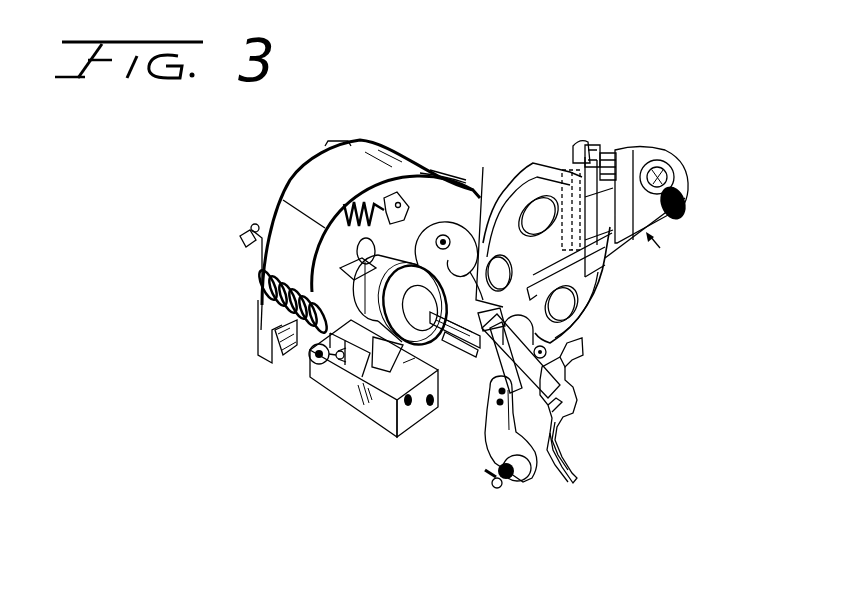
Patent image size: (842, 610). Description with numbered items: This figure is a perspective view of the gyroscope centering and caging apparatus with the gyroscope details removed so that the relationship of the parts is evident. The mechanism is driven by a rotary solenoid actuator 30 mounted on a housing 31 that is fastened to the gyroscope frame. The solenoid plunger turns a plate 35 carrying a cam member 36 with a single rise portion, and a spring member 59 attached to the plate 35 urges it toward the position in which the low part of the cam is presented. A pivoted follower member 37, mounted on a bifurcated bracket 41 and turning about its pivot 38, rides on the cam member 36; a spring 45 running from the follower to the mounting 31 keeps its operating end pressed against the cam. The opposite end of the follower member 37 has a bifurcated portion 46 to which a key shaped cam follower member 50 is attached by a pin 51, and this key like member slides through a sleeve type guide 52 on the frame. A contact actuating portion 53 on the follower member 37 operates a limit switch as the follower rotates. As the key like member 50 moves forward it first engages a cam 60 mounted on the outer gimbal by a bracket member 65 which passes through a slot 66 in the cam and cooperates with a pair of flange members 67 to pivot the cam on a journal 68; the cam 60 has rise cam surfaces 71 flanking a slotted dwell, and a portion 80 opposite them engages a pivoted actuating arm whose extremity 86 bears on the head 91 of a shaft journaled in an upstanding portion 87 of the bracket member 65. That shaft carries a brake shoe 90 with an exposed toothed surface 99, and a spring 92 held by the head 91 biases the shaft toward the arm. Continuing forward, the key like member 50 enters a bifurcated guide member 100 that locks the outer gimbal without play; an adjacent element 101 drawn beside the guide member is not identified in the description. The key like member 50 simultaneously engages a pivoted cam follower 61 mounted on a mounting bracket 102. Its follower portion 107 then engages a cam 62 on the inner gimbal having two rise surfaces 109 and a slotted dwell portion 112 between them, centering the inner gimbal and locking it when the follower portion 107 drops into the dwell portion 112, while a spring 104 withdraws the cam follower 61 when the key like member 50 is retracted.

The actuator 30 is at (308, 180).
The housing 31 is at (275, 204).
The plate 35 is at (444, 195).
The cam member 36 is at (490, 210).
The follower member 37 is at (363, 360).
The pivot 38 is at (312, 364).
The bifurcated bracket 41 is at (378, 410).
The spring 45 is at (280, 272).
The bifurcated portion 46 is at (370, 242).
The key shaped cam follower member 50 is at (451, 335).
The pin 51 is at (360, 257).
The sleeve type guide 52 is at (384, 260).
The contact actuating portion 53 is at (340, 359).
The spring member 59 is at (366, 200).
The cam 60 is at (585, 300).
The cam follower 61 is at (482, 400).
The cam 62 is at (560, 362).
The bracket member 65 is at (664, 248).
The slot 66 is at (600, 283).
The flange members 67 is at (547, 294).
The journal 68 is at (570, 195).
The cam surfaces 71 is at (508, 205).
The portion 80 is at (603, 263).
The extremity 86 is at (580, 150).
The upstanding portion 87 is at (637, 150).
The brake shoe 90 is at (675, 187).
The head 91 is at (603, 157).
The spring 92 is at (613, 157).
The toothed surface 99 is at (678, 210).
The bifurcated guide member 100 is at (483, 343).
The coupling 101 is at (485, 368).
The mounting bracket 102 is at (490, 440).
The spring 104 is at (493, 486).
The follower portion 107 is at (567, 380).
The rise surfaces 109 is at (567, 373).
The dwell portion 112 is at (568, 407).